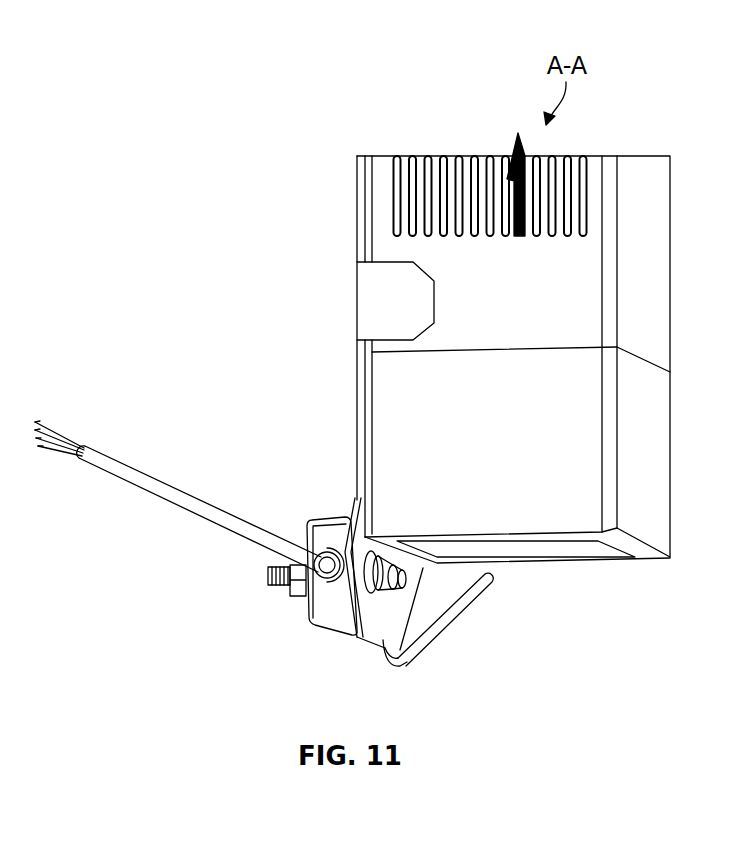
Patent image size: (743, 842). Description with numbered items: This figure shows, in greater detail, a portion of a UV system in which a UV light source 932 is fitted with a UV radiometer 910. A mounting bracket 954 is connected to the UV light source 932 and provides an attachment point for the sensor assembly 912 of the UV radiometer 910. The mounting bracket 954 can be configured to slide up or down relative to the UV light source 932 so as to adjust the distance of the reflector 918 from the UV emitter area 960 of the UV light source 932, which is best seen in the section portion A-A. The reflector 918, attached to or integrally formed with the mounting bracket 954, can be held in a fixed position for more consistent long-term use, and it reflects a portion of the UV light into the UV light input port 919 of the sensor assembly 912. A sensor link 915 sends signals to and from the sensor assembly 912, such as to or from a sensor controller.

The UV radiometer 910 is at (274, 624).
The sensor assembly 912 is at (334, 518).
The sensor link 915 is at (115, 455).
The reflector 918 is at (455, 621).
The UV light input port 919 is at (397, 582).
The UV light source 932 is at (653, 243).
The mounting bracket 954 is at (357, 220).
The UV emitter area 960 is at (563, 543).